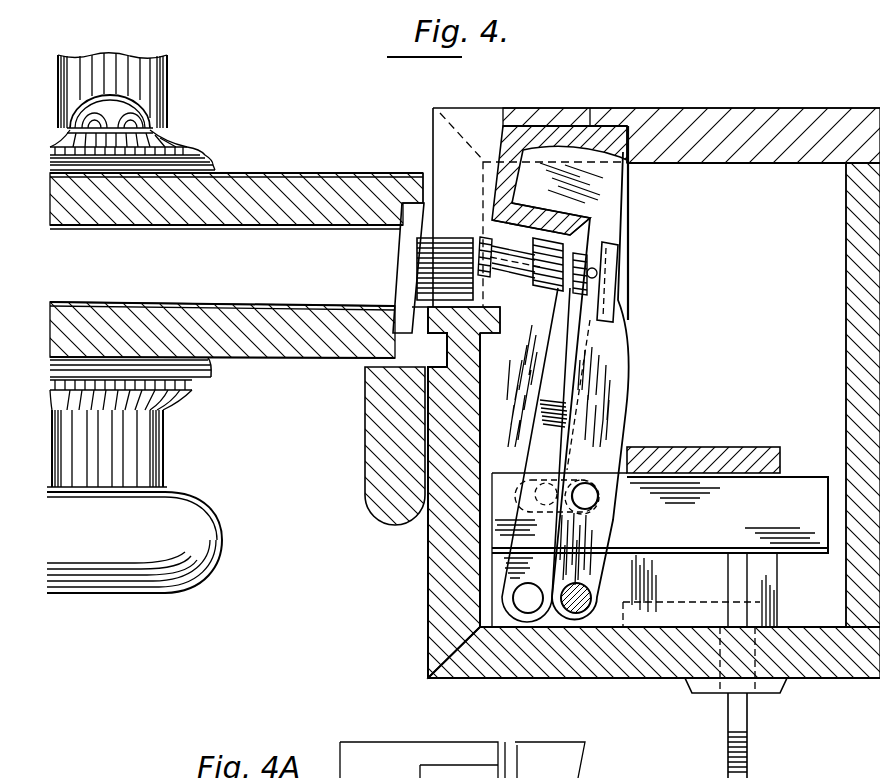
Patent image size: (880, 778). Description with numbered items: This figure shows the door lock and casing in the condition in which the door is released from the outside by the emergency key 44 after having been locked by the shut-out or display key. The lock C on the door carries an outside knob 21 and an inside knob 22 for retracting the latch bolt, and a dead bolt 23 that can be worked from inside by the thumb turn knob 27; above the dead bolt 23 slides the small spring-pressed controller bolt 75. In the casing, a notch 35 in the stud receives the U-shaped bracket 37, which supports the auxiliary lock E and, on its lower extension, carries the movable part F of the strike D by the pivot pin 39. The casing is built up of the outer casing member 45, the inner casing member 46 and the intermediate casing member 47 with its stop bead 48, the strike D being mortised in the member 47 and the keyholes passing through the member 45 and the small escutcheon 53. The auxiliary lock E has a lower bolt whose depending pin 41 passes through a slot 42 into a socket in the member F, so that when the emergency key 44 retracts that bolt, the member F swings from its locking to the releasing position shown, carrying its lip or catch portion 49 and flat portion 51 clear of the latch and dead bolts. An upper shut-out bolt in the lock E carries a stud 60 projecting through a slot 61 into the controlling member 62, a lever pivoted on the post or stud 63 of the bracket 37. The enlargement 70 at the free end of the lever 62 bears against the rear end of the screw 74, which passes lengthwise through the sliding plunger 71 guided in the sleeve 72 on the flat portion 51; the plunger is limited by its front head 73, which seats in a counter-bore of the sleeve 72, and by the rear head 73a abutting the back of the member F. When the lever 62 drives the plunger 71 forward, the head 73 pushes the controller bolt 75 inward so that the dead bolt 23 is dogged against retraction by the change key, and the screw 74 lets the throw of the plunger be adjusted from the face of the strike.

The outside knob 21 is at (134, 540).
The inside knob 22 is at (170, 82).
The dead bolt 23 is at (440, 298).
The thumb turn knob 27 is at (148, 117).
The notch 35 is at (840, 395).
The U-shaped bracket 37 is at (752, 447).
The pivot pin 39 is at (530, 602).
The depending pin 41 is at (541, 482).
The slot 42 is at (530, 498).
The emergency key 44 is at (748, 752).
The outer casing member 45 is at (643, 670).
The inner casing member 46 is at (663, 110).
The intermediate casing member 47 is at (432, 586).
The stop bead 48 is at (373, 471).
The lip or catch portion 49 is at (498, 180).
The flat portion 51 is at (589, 222).
The escutcheon 53 is at (787, 690).
The stud 60 is at (592, 502).
The slot 61 is at (545, 493).
The controlling member 62 is at (613, 360).
The post or stud 63 is at (577, 602).
The enlargement 70 is at (608, 273).
The sliding plunger 71 is at (520, 245).
The sleeve 72 is at (548, 291).
The head 73 is at (492, 240).
The rear head 73a is at (588, 258).
The screw 74 is at (596, 267).
The controller bolt 75 is at (437, 250).
The lock C is at (236, 265).
The strike D is at (442, 295).
The auxiliary lock E is at (660, 515).
The movable part of the strike F is at (500, 130).